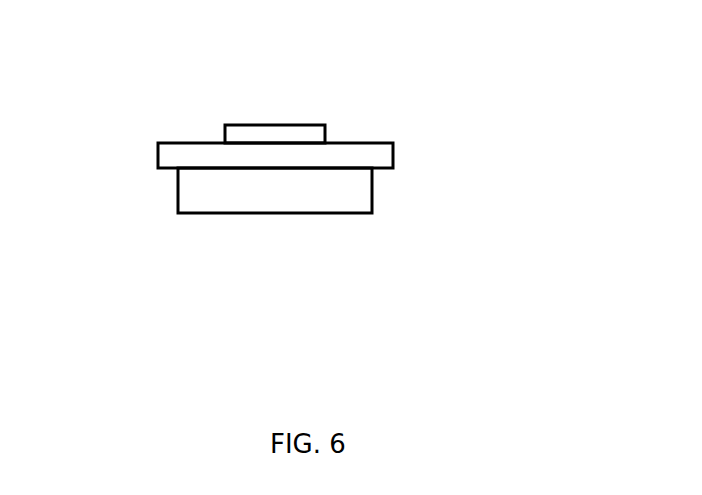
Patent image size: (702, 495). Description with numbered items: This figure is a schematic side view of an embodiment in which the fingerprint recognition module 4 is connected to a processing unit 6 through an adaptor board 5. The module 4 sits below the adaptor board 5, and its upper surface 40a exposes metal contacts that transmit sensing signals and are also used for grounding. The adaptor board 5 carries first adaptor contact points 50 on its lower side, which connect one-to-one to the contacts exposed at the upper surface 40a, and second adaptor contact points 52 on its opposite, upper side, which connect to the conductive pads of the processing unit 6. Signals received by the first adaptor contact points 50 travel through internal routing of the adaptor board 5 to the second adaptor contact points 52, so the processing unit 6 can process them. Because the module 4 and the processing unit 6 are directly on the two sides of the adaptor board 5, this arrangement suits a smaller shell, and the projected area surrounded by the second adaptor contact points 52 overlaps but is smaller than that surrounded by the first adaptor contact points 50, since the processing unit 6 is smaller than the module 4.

The processing unit 6 is at (326, 125).
The adaptor board 5 is at (393, 150).
The fingerprint recognition module 4 is at (372, 192).
The first adaptor contact points 50 is at (200, 165).
The second adaptor contact points 52 is at (303, 143).
The upper surface 40a is at (223, 168).